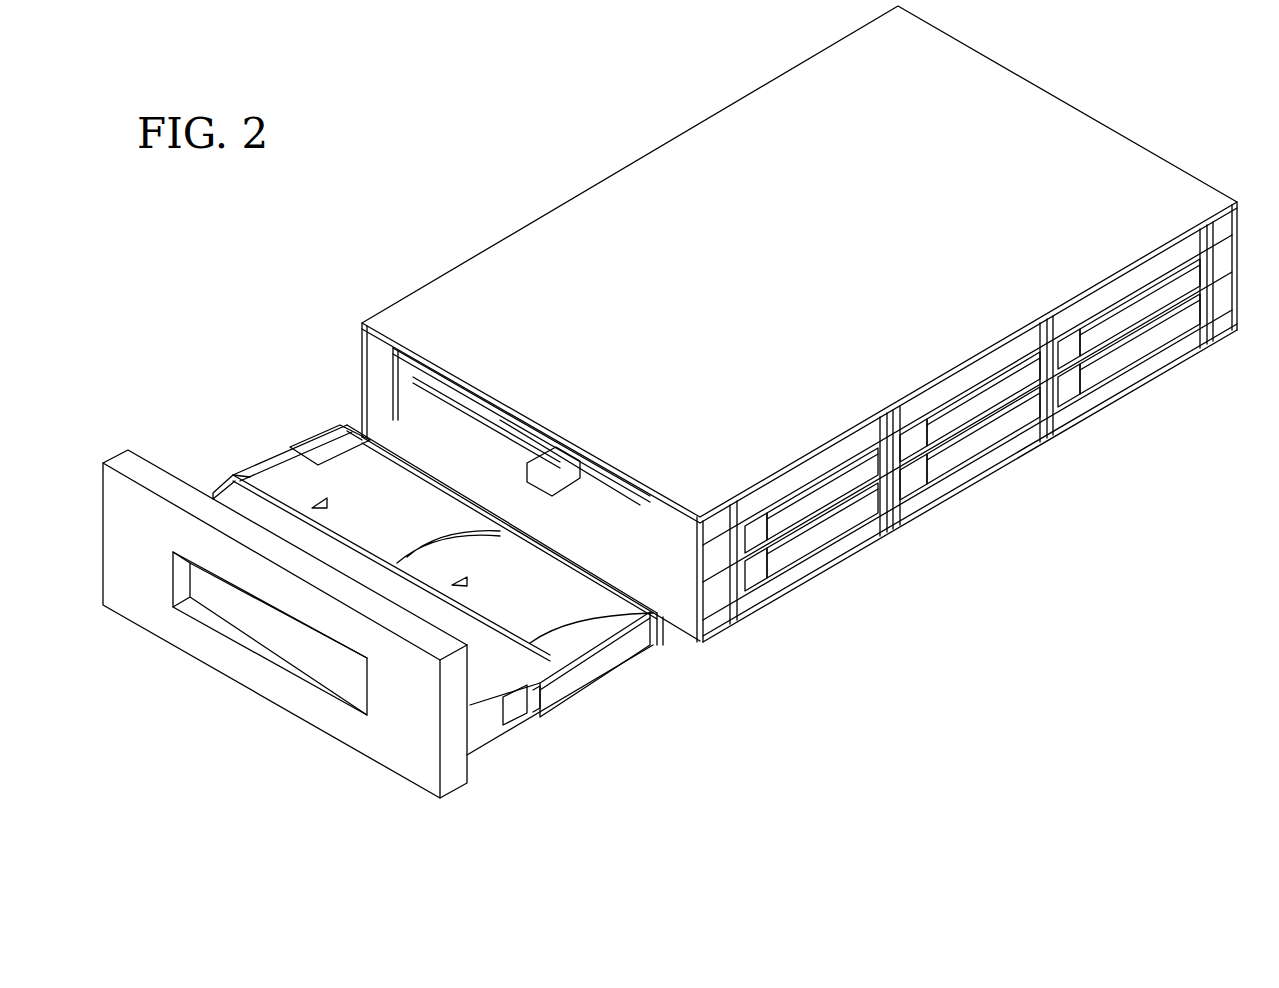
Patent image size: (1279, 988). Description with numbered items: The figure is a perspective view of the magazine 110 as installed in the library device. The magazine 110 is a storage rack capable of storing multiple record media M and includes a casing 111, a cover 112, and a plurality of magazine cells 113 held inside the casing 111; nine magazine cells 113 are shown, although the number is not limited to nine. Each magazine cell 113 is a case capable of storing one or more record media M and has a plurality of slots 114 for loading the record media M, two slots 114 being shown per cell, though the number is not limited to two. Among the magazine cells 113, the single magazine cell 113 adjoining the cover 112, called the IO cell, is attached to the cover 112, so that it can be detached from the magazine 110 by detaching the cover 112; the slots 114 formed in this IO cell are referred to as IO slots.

The magazine 110 is at (577, 138).
The casing 111 is at (490, 248).
The cover 112 is at (143, 460).
The magazine cell 113 is at (660, 622).
The slot 114 is at (318, 437).
The record medium M is at (560, 688).